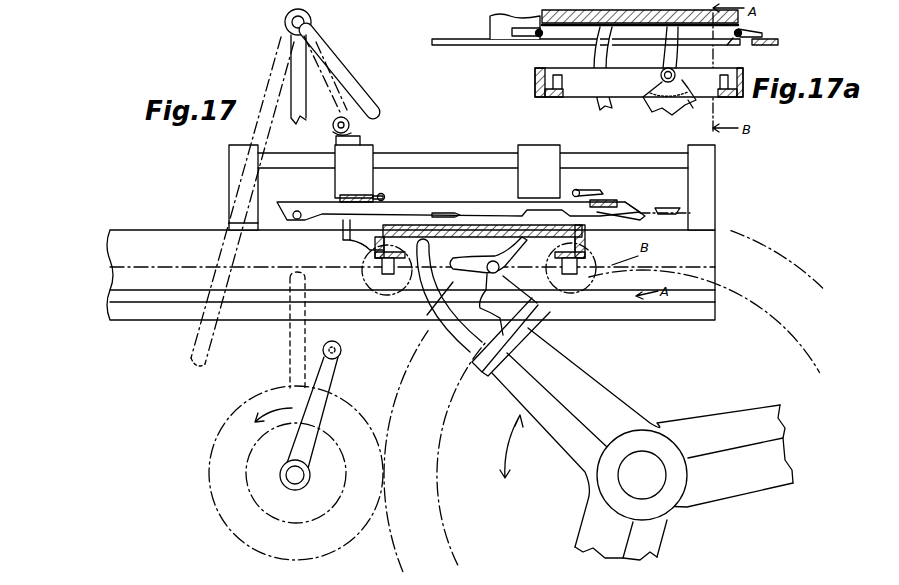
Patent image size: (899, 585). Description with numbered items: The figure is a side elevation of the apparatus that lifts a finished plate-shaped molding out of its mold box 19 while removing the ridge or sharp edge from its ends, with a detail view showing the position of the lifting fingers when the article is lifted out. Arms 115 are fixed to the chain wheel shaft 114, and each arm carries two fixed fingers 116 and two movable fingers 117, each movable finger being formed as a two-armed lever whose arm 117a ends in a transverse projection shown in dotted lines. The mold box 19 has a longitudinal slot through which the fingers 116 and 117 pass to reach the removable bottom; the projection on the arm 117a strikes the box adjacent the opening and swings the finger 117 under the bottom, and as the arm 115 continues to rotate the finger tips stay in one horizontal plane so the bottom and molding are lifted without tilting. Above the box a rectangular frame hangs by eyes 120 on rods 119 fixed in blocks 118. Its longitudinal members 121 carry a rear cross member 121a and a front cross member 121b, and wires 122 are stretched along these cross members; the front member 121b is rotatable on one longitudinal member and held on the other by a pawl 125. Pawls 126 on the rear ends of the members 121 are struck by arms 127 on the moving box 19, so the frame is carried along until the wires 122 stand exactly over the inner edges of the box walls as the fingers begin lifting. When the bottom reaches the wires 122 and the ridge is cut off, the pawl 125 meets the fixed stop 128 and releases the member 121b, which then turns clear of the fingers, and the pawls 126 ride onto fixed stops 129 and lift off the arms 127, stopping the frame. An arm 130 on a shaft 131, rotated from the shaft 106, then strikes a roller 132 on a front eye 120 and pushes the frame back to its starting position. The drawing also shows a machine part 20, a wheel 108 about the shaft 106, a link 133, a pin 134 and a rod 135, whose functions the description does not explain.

In FIG. 17, the frame 20 is at (86, 270).
In FIG. 17, the mold box 19 is at (479, 260).
In FIG. 17A, the mold box 19 is at (639, 82).
In FIG. 17, the shaft 106 is at (296, 480).
In FIG. 17, the crank wheel 108 is at (326, 522).
In FIG. 17, the chain wheel shaft 114 is at (642, 475).
In FIG. 17, the arm 115 is at (632, 429).
In FIG. 17A, the arm 115 is at (702, 110).
In FIG. 17, the fixed finger 116 is at (437, 325).
In FIG. 17A, the fixed finger 116 is at (598, 52).
In FIG. 17, the movable finger 117 is at (505, 268).
In FIG. 17A, the movable finger 117 is at (667, 53).
In FIG. 17, the arm of the movable finger 117a is at (447, 294).
In FIG. 17A, the arm of the movable finger 117a is at (648, 102).
In FIG. 17, the block 118 is at (231, 180).
In FIG. 17, the rod 119 is at (290, 165).
In FIG. 17, the eye 120 is at (447, 171).
In FIG. 17, the longitudinal frame member 121 is at (455, 202).
In FIG. 17A, the longitudinal frame member 121 is at (478, 46).
In FIG. 17, the cross member 121a is at (339, 198).
In FIG. 17A, the cross member 121a is at (490, 36).
In FIG. 17, the front cross member 121b is at (600, 200).
In FIG. 17A, the front cross member 121b is at (778, 44).
In FIG. 17, the wire 122 is at (383, 194).
In FIG. 17A, the wire 122 is at (540, 38).
In FIG. 17, the pawl 125 is at (635, 216).
In FIG. 17, the pawl 126 is at (340, 232).
In FIG. 17, the arm 127 is at (355, 248).
In FIG. 17, the fixed stop 128 is at (665, 201).
In FIG. 17, the fixed stop 129 is at (460, 215).
In FIG. 17, the arm 130 is at (330, 80).
In FIG. 17, the shaft 131 is at (285, 26).
In FIG. 17, the roller 132 is at (350, 127).
In FIG. 17, the link 133 is at (330, 383).
In FIG. 17, the pin 134 is at (341, 350).
In FIG. 17, the rod 135 is at (275, 126).